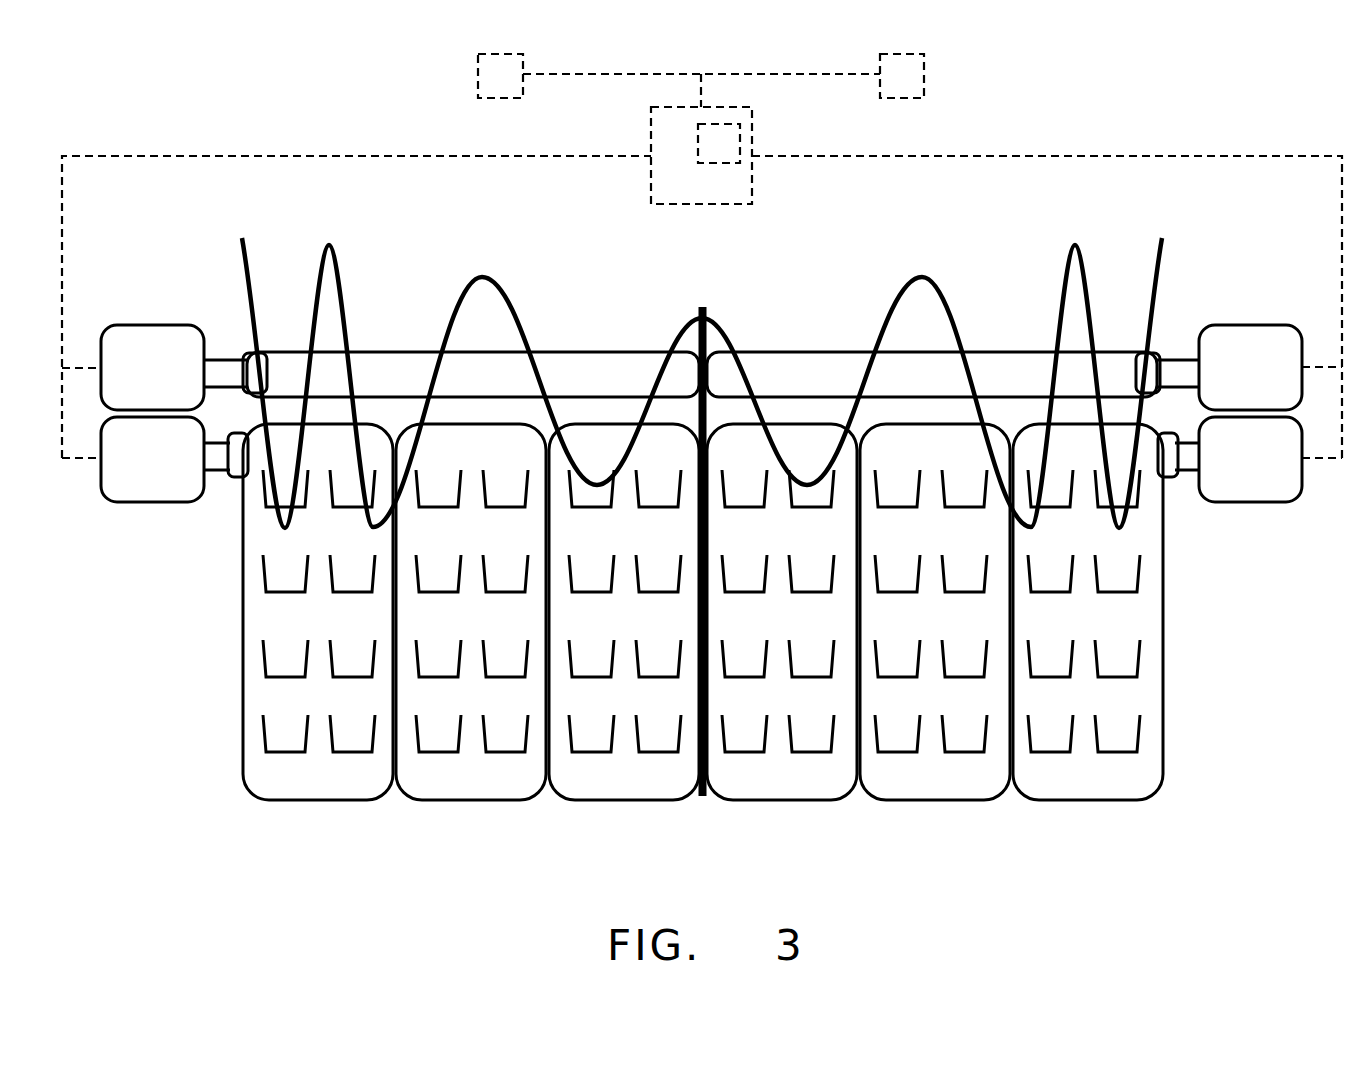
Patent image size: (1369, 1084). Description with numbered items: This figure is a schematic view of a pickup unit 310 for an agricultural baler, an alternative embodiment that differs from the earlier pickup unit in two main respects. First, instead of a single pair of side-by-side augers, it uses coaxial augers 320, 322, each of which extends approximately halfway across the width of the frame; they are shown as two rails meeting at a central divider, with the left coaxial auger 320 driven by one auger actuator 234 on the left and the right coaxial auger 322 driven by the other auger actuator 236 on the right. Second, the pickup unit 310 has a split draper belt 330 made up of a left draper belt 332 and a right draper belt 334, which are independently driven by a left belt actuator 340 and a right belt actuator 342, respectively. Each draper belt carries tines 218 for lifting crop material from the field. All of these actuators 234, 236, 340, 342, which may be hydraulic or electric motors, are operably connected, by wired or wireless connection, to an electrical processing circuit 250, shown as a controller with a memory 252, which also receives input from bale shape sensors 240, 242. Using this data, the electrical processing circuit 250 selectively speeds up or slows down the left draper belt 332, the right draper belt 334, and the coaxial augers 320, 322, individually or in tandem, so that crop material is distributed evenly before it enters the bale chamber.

The tines 218 is at (357, 752).
The auger actuator 234 is at (160, 325).
The auger actuator 236 is at (1247, 325).
The bale shape sensor 240 is at (478, 82).
The bale shape sensor 242 is at (924, 72).
The electrical processing circuit 250 is at (651, 118).
The memory 252 is at (740, 137).
The pickup unit 310 is at (707, 672).
The coaxial auger 320 is at (375, 352).
The coaxial auger 322 is at (1022, 352).
The split draper belt 330 is at (613, 813).
The left draper belt 332 is at (243, 722).
The right draper belt 334 is at (1163, 690).
The left belt actuator 340 is at (155, 502).
The right belt actuator 342 is at (1253, 502).